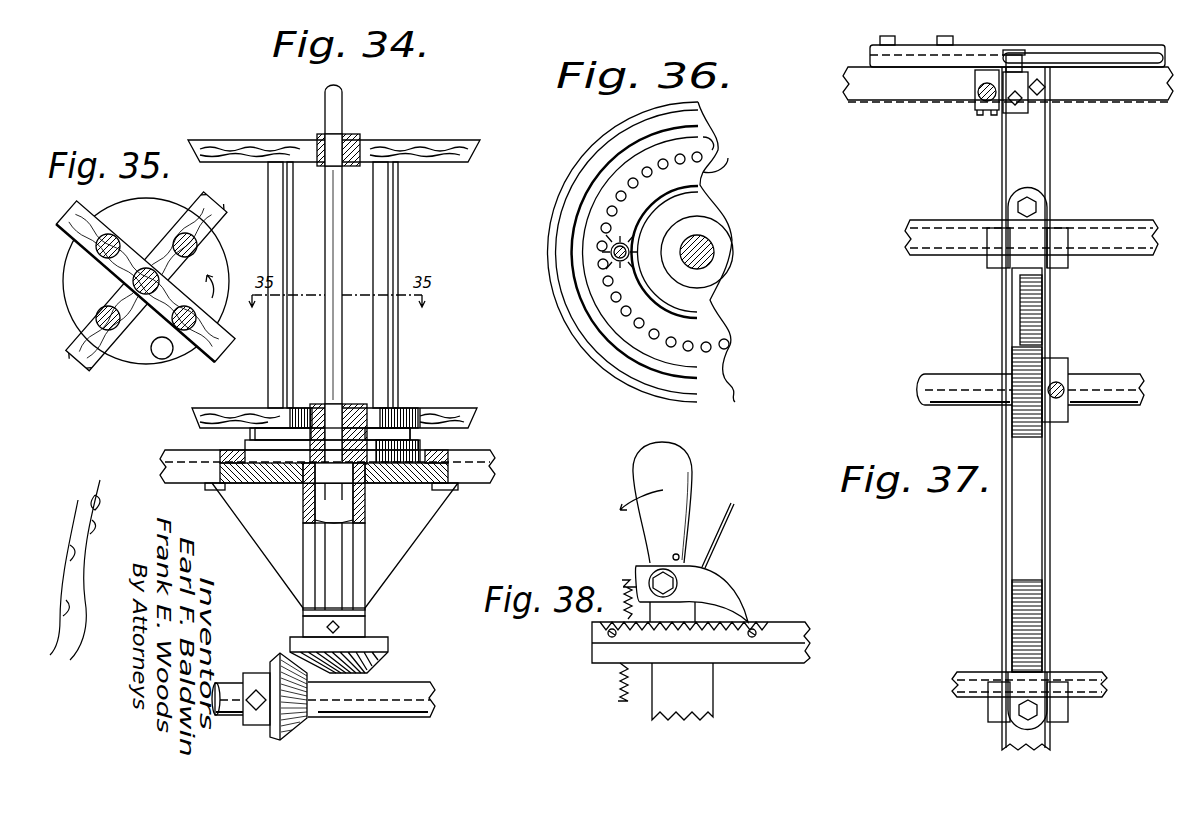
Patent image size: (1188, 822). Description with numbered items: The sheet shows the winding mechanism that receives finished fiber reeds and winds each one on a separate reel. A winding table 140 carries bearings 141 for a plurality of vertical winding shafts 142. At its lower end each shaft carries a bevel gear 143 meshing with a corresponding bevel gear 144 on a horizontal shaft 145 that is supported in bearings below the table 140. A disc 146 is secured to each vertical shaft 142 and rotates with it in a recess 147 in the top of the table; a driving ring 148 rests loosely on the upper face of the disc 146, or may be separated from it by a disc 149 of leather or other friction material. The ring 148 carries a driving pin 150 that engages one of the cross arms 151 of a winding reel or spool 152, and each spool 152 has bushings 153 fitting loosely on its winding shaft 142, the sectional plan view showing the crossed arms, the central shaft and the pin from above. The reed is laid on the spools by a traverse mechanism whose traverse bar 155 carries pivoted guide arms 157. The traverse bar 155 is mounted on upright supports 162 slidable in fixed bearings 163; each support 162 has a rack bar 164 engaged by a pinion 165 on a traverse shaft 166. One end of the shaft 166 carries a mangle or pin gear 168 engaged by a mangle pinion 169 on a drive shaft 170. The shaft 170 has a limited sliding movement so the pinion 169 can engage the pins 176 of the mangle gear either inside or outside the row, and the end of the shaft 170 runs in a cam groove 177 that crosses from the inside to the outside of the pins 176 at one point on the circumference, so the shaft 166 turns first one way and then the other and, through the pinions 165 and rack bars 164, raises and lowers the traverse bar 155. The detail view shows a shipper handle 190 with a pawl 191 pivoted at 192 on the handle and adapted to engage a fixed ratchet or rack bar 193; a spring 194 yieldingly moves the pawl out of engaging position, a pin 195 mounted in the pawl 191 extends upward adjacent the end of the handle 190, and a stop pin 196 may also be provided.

In FIG. 34, the winding table 140 is at (483, 455).
In FIG. 37, the winding table 140 is at (1124, 228).
In FIG. 34, the bearings 141 is at (270, 535).
In FIG. 34, the vertical winding shaft 142 is at (340, 108).
In FIG. 35, the vertical winding shaft 142 is at (146, 269).
In FIG. 34, the bevel gear 143 is at (372, 647).
In FIG. 34, the bevel gear 144 is at (296, 724).
In FIG. 34, the horizontal shaft 145 is at (432, 697).
In FIG. 34, the disc 146 is at (277, 454).
In FIG. 34, the recess 147 is at (240, 445).
In FIG. 34, the driving ring 148 is at (410, 418).
In FIG. 35, the driving ring 148 is at (218, 260).
In FIG. 34, the friction disc 149 is at (440, 430).
In FIG. 34, the driving pin 150 is at (300, 405).
In FIG. 35, the driving pin 150 is at (159, 359).
In FIG. 34, the cross arm 151 is at (407, 417).
In FIG. 35, the cross arm 151 is at (222, 344).
In FIG. 34, the winding reel 152 is at (398, 226).
In FIG. 34, the bushing 153 is at (346, 135).
In FIG. 37, the traverse bar 155 is at (1110, 100).
In FIG. 37, the guide arm 157 is at (1090, 52).
In FIG. 37, the upright support 162 is at (1040, 165).
In FIG. 37, the fixed bearing 163 is at (1064, 266).
In FIG. 37, the rack bar 164 is at (1028, 480).
In FIG. 37, the pinion 165 is at (1022, 352).
In FIG. 36, the traverse shaft 166 is at (713, 250).
In FIG. 37, the traverse shaft 166 is at (953, 398).
In FIG. 36, the mangle gear 168 is at (558, 212).
In FIG. 36, the mangle pinion 169 is at (630, 247).
In FIG. 36, the drive shaft 170 is at (632, 260).
In FIG. 36, the pins 176 is at (641, 170).
In FIG. 36, the cam groove 177 is at (722, 155).
In FIG. 38, the shipper handle 190 is at (676, 460).
In FIG. 38, the pawl 191 is at (715, 592).
In FIG. 38, the pivot 192 is at (655, 578).
In FIG. 38, the ratchet bar 193 is at (772, 628).
In FIG. 38, the spring 194 is at (632, 672).
In FIG. 38, the pin 195 is at (748, 497).
In FIG. 38, the stop pin 196 is at (683, 552).